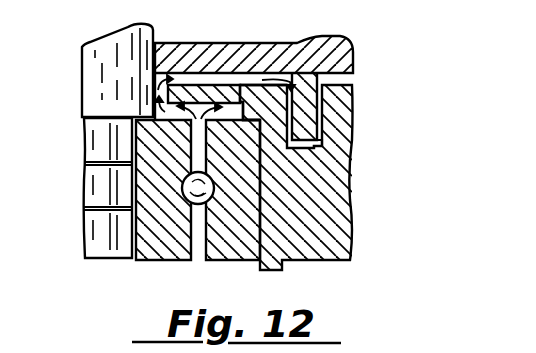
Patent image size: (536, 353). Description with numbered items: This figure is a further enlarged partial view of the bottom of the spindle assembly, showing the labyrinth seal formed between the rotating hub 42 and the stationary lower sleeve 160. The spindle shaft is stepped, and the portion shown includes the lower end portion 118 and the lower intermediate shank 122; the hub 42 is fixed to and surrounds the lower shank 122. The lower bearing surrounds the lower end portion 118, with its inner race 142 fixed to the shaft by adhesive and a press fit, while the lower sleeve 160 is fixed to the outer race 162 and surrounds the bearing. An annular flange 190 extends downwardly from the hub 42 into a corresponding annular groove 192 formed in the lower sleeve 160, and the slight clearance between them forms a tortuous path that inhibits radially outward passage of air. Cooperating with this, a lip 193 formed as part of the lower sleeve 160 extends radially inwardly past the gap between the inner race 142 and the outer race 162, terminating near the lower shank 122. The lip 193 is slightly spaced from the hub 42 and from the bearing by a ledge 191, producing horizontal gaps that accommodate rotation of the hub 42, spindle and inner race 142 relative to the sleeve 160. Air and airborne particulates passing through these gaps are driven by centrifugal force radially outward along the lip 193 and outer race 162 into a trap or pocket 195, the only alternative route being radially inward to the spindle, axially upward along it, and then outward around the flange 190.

The hub 42 is at (224, 43).
The lower end portion 118 is at (84, 182).
The lower intermediate shank 122 is at (113, 62).
The inner race 142 is at (160, 252).
The lower sleeve 160 is at (330, 218).
The outer race 162 is at (243, 252).
The annular flange 190 is at (290, 103).
The ledge 191 is at (255, 113).
The annular groove 192 is at (315, 142).
The lip 193 is at (200, 90).
The trap or pocket 195 is at (243, 105).